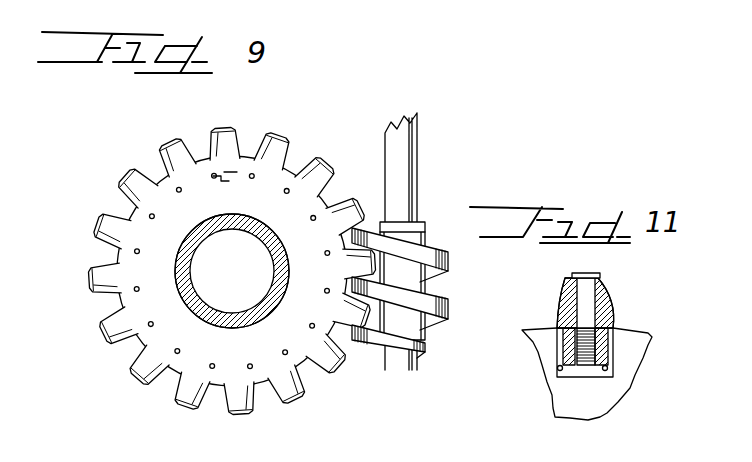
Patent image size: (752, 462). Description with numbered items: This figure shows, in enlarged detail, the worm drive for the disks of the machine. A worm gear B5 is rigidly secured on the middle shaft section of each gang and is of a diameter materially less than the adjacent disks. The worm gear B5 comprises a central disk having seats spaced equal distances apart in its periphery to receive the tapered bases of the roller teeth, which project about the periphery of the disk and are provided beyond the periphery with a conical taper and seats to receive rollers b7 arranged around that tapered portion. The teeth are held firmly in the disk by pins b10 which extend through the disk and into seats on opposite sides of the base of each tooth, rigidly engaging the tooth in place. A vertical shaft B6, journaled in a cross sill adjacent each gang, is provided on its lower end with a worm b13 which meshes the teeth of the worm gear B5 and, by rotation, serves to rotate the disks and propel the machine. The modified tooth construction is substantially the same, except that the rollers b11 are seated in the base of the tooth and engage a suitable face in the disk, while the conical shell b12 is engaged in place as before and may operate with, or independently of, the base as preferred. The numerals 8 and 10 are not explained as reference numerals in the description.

In FIG. 9, the worm gear B5 is at (268, 358).
In FIG. 11, the worm gear B5 is at (637, 344).
In FIG. 9, the vertical shaft B6 is at (405, 160).
In FIG. 9, the gear teeth 8 is at (240, 396).
In FIG. 9, the rollers b7 is at (343, 413).
In FIG. 9, the worm b13 is at (441, 248).
In FIG. 9, the key 10 is at (235, 108).
In FIG. 11, the conical shell b12 is at (565, 292).
In FIG. 11, the rollers b11 is at (620, 323).
In FIG. 11, the pins b10 is at (562, 372).